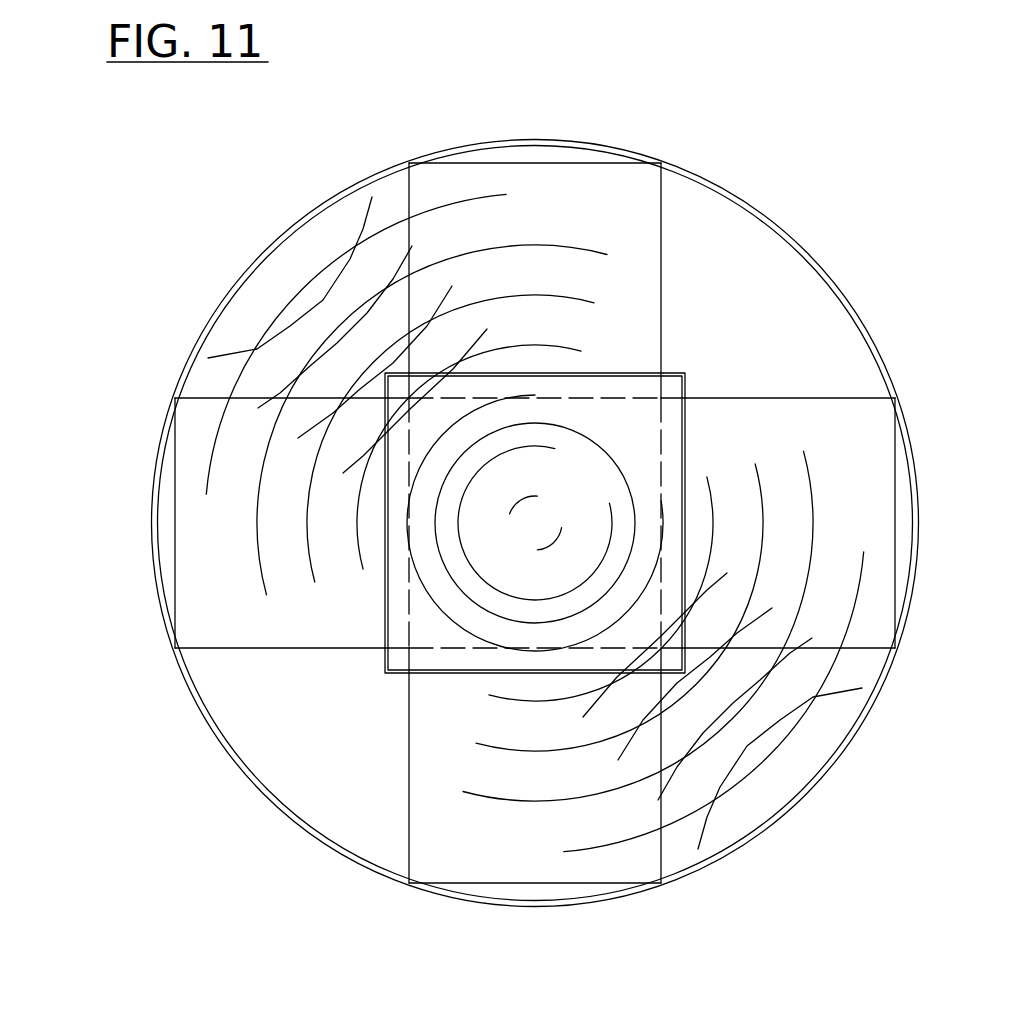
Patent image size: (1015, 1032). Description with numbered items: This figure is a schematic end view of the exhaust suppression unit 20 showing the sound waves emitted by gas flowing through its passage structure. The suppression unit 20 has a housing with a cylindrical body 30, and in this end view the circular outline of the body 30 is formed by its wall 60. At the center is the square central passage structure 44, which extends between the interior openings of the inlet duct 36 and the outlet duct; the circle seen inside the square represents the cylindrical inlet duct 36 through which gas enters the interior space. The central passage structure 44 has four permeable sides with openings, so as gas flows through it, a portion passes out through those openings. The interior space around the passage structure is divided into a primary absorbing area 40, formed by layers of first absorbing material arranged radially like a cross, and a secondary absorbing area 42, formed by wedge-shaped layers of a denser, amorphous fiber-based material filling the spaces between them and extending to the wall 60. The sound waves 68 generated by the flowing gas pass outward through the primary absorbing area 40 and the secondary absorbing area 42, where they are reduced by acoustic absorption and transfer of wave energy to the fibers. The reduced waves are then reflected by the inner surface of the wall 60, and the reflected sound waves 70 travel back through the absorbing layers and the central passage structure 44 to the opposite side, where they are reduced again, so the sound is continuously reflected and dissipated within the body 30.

The suppression unit 20 is at (535, 485).
The cylindrical body 30 is at (783, 227).
The inlet duct 36 is at (459, 594).
The primary absorbing area 40 is at (514, 512).
The secondary absorbing area 42 is at (563, 474).
The central passage structure 44 is at (688, 377).
The wall 60 is at (690, 133).
The sound waves 68 is at (975, 516).
The reflected sound waves 70 is at (479, 536).